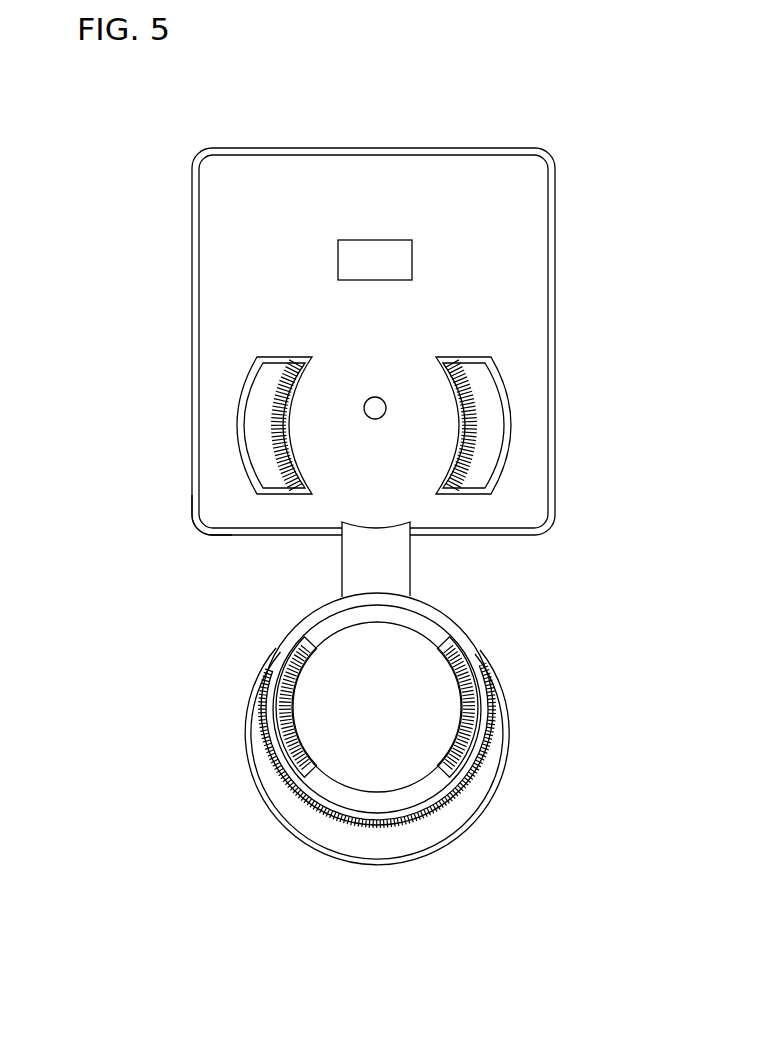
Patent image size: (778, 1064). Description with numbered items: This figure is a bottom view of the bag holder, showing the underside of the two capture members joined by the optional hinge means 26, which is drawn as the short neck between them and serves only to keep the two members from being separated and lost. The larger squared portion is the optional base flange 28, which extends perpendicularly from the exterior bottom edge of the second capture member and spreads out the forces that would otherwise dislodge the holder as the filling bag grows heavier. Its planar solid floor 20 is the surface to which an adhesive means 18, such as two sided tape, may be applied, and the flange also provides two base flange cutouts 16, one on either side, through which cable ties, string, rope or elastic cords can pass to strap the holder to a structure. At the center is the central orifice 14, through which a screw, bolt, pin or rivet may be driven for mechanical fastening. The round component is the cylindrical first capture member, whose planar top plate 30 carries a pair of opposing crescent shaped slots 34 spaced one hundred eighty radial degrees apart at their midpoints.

The central orifice 14 is at (375, 396).
The base flange cutouts 16 is at (498, 409).
The adhesive means 18 is at (362, 253).
The planar solid floor 20 is at (502, 202).
The hinge means 26 is at (403, 560).
The base flange 28 is at (214, 505).
The planar top plate 30 is at (350, 735).
The crescent shaped slots 34 is at (480, 647).